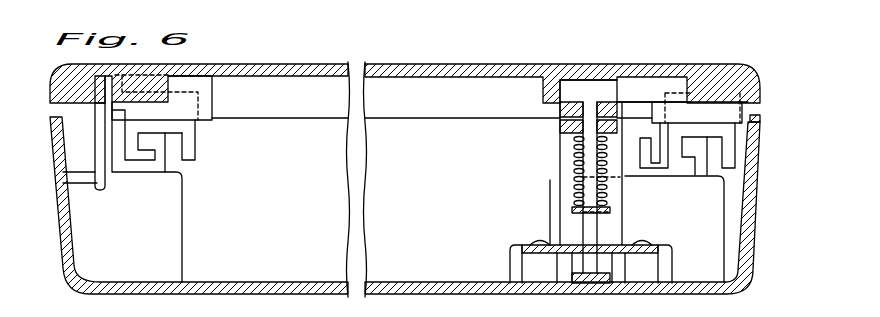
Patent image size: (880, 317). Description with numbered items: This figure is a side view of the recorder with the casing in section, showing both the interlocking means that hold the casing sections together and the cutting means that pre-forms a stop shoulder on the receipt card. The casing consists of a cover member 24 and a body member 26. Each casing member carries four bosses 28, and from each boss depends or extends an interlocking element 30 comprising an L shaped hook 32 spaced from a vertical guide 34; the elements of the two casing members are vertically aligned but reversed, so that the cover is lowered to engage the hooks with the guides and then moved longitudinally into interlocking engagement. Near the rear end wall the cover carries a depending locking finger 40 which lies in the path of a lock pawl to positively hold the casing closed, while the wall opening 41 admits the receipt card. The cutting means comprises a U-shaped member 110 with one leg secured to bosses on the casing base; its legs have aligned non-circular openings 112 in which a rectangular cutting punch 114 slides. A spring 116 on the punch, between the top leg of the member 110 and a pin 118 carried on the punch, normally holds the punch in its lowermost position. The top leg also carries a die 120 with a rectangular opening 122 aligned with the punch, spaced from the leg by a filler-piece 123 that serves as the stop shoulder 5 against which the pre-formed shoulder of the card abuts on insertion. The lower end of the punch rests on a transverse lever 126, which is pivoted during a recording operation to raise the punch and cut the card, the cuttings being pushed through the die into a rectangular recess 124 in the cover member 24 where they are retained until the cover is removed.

The channel 5 is at (612, 101).
The cover member 24 is at (418, 64).
The body member 26 is at (405, 291).
The bosses 28 is at (196, 81).
The interlocking element 30 is at (155, 128).
The L shaped hook 32 is at (143, 157).
The vertical guide 34 is at (193, 147).
The locking finger 40 is at (63, 184).
The wall opening 41 is at (761, 118).
The U-shaped member 110 is at (562, 153).
The non-circular openings 112 is at (575, 135).
The cutting punch 114 is at (593, 228).
The spring 116 is at (578, 170).
The pin 118 is at (572, 213).
The die 120 is at (571, 103).
The rectangular opening 122 is at (597, 103).
The filler-piece 123 is at (560, 115).
The rectangular recess 124 is at (562, 82).
The lever 126 is at (592, 281).